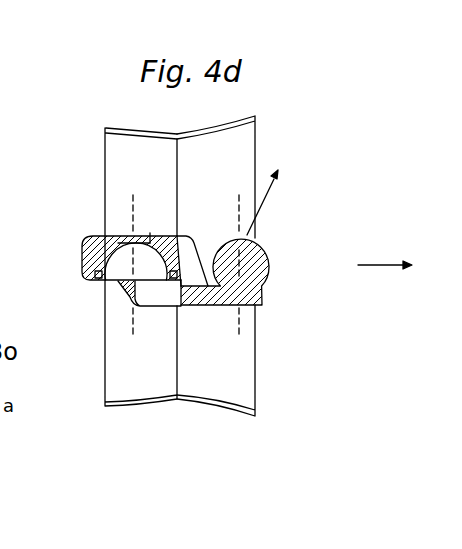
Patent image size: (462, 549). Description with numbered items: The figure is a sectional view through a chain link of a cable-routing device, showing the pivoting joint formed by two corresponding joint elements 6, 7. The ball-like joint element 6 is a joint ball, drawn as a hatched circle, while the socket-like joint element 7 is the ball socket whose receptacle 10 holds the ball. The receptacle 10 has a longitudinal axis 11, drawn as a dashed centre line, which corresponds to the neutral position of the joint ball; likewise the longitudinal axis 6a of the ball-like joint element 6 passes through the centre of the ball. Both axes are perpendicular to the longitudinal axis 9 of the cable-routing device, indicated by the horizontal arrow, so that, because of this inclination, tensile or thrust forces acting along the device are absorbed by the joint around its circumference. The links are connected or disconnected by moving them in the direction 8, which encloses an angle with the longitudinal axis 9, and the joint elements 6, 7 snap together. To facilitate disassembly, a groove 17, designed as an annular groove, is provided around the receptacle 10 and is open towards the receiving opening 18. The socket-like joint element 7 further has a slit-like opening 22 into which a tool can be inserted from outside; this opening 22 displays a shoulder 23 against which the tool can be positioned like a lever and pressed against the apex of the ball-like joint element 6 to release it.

The joint element 6 is at (262, 262).
The longitudinal axis of ball-like joint element 6a is at (216, 266).
The joint element 7 is at (100, 255).
The direction 8 is at (265, 185).
The longitudinal axis of the cable-routing device 9 is at (397, 267).
The receptacle 10 is at (117, 265).
The longitudinal axis of the receptacle 11 is at (141, 267).
The groove 17 is at (97, 278).
The receiving opening 18 is at (152, 289).
The slit-like opening 22 is at (118, 242).
The shoulder 23 is at (127, 238).